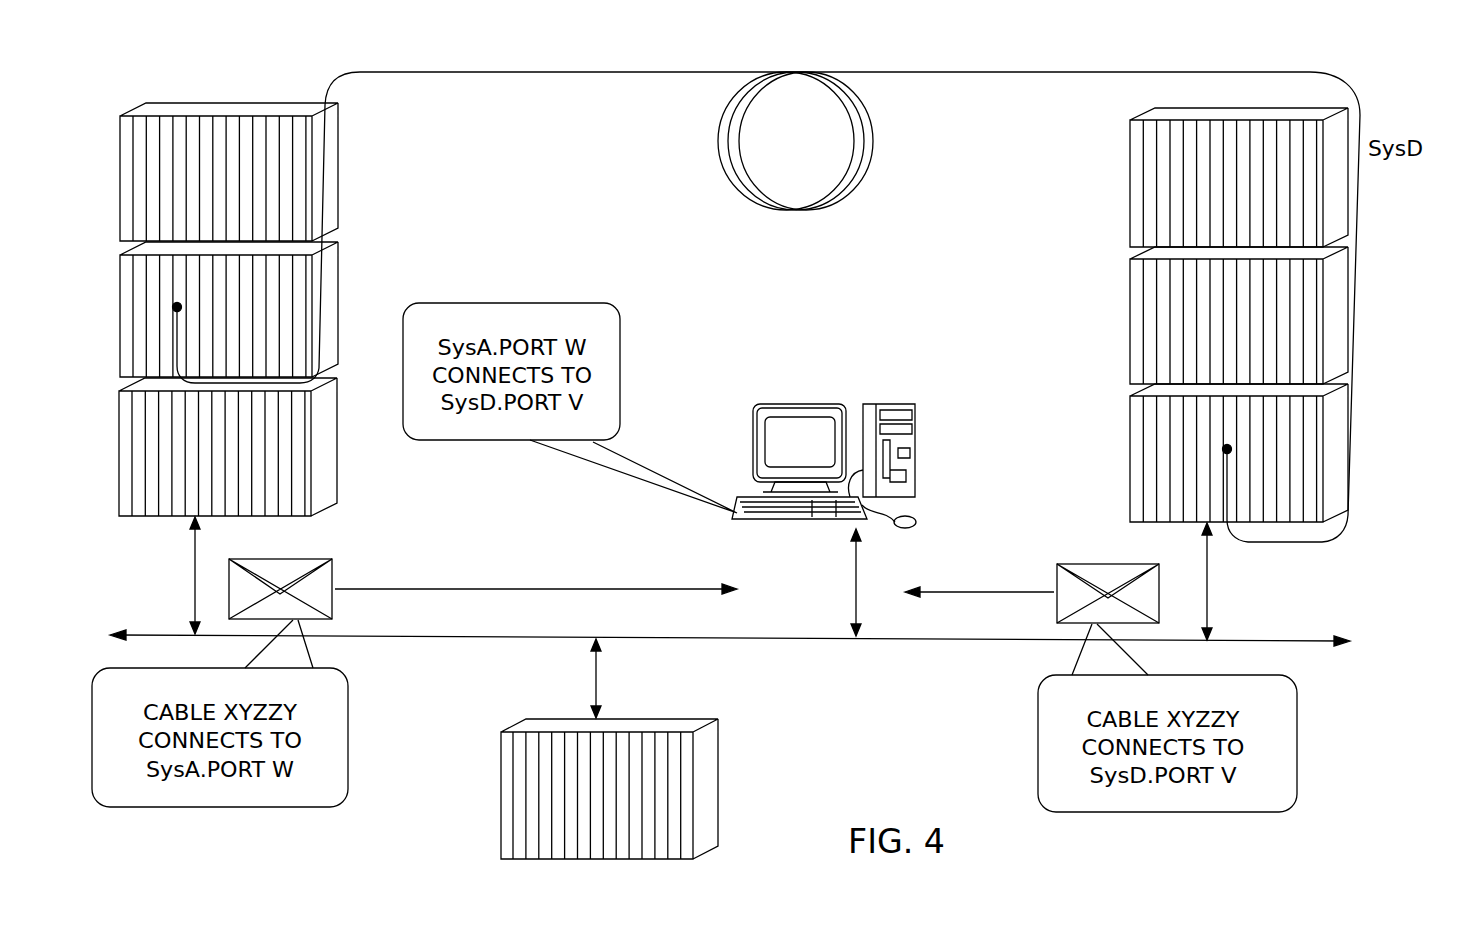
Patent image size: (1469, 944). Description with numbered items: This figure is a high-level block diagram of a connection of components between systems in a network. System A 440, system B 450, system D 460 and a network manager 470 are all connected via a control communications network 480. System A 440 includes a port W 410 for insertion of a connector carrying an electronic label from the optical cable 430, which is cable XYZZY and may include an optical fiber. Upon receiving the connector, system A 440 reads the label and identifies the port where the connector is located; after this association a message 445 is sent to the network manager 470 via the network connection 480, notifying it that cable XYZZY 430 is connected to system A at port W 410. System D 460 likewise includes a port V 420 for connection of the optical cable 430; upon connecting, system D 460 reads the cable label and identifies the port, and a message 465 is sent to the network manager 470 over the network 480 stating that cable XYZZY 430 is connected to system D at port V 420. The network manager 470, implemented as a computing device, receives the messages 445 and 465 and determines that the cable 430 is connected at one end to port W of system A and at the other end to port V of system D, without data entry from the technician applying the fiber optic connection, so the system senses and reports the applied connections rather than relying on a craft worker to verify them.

The port W 410 is at (119, 348).
The port V 420 is at (1130, 434).
The optical cable 430 is at (583, 258).
The system A 440 is at (186, 102).
The message 445 is at (333, 575).
The system B 450 is at (627, 860).
The system D 460 is at (1343, 512).
The message 465 is at (1057, 583).
The network manager 470 is at (799, 404).
The control communications network 480 is at (753, 642).